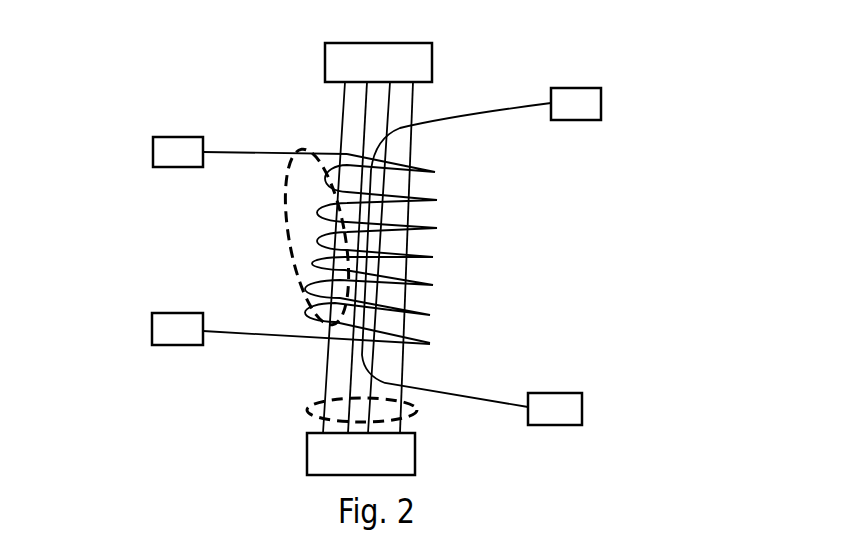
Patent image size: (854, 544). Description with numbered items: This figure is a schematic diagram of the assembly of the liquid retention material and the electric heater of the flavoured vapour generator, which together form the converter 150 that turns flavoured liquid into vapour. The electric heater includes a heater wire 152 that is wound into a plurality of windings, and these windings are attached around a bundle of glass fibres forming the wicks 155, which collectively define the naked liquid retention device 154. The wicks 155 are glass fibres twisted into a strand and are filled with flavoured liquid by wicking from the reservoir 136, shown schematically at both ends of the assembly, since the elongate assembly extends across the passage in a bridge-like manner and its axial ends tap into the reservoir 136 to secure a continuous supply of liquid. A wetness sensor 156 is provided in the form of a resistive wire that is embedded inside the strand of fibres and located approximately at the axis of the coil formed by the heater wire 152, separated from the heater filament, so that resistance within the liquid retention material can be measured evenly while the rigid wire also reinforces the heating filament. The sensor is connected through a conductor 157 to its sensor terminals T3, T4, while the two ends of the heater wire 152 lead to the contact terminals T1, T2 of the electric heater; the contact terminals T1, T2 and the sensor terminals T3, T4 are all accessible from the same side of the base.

The reservoir 136 is at (369, 259).
The converter 150 is at (277, 252).
The heater wire 152 is at (436, 172).
The naked liquid retention device 154 is at (294, 410).
The wicks 155 is at (344, 117).
The sensor 156 is at (456, 374).
The conductor 157 is at (466, 108).
The contact terminal T1 is at (250, 152).
The contact terminal T2 is at (291, 329).
The sensor terminal T3 is at (576, 104).
The sensor terminal T4 is at (555, 409).